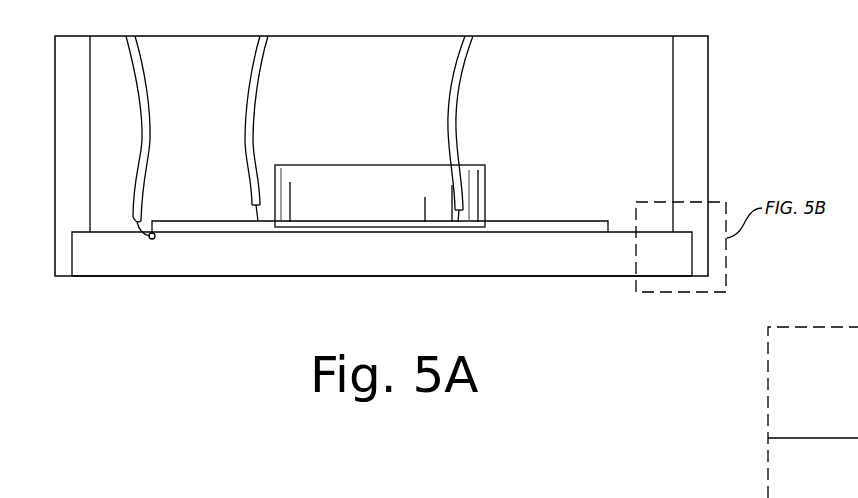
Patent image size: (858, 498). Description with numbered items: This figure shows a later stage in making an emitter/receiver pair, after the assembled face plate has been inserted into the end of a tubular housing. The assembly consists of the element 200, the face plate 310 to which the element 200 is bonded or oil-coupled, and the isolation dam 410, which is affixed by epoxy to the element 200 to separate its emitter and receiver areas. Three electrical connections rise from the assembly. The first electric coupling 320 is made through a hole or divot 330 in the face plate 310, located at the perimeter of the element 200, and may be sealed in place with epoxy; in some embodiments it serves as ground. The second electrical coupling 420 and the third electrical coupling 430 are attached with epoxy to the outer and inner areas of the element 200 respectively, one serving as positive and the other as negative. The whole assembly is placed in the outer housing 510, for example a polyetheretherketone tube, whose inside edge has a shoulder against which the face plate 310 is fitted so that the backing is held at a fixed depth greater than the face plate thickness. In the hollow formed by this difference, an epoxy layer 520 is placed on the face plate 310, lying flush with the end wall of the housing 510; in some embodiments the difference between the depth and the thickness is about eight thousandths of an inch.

The element 200 is at (577, 219).
The face plate 310 is at (325, 277).
The first electric coupling 320 is at (145, 95).
The hole or divot 330 is at (158, 237).
The isolation dam 410 is at (383, 163).
The second electrical coupling 420 is at (258, 80).
The third electrical coupling 430 is at (458, 88).
The outer housing 510 is at (698, 73).
The epoxy layer 520 is at (515, 277).